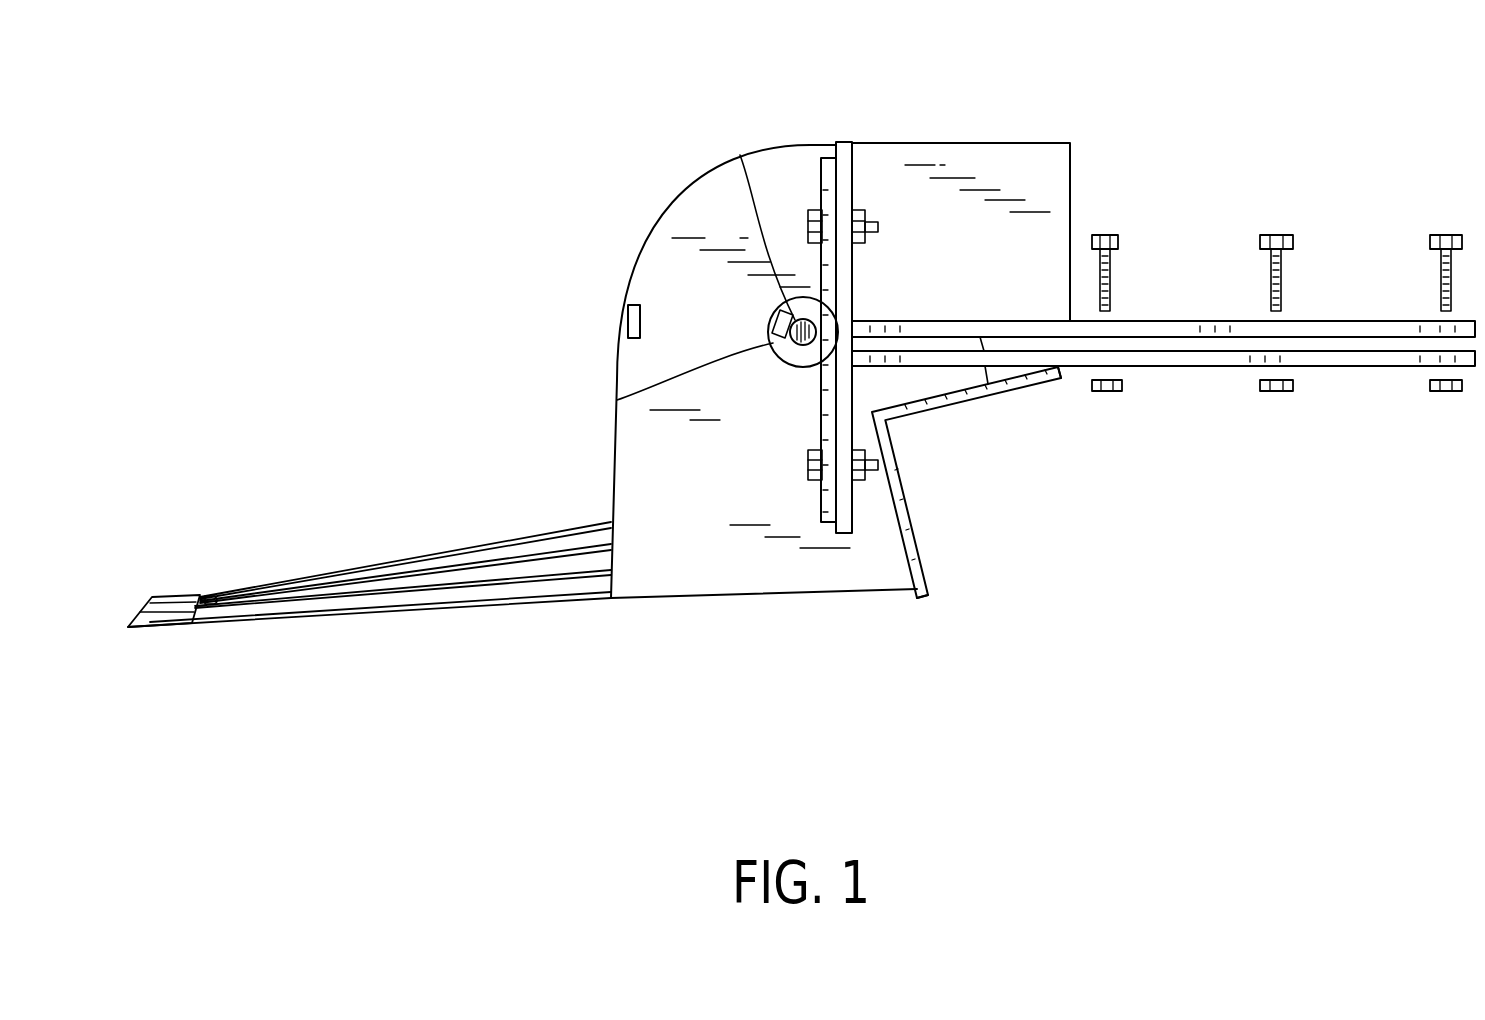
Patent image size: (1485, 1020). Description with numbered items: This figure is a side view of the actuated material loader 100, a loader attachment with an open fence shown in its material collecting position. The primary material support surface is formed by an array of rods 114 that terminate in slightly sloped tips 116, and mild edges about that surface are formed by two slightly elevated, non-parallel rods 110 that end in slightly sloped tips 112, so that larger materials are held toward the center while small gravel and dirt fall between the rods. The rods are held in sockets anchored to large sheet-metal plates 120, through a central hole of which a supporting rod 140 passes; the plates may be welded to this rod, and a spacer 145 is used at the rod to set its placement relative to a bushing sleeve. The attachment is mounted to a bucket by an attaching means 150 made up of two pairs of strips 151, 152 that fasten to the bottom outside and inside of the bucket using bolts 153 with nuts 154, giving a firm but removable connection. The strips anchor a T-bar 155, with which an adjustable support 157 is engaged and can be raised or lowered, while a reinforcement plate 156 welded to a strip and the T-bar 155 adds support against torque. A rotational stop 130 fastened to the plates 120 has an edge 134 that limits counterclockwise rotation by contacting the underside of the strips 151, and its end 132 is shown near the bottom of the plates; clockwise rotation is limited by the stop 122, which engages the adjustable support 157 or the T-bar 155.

The actuated material loader 100 is at (333, 150).
The non-parallel rods 110 is at (500, 536).
The slightly sloped tips 112 is at (210, 598).
The rods 114 is at (442, 610).
The slightly sloped tips 116 is at (148, 628).
The plates 120 is at (657, 262).
The stop 122 is at (628, 325).
The rotational stop 130 is at (892, 450).
The bracket lower end 132 is at (930, 590).
The edge 134 is at (1060, 380).
The supporting rod 140 is at (740, 155).
The spacer 145 is at (617, 400).
The attaching means 150 is at (1163, 339).
The strips 151 is at (1308, 362).
The strips 152 is at (1328, 328).
The bolts 153 is at (1440, 238).
The nuts 154 is at (1432, 392).
The T-bar 155 is at (848, 150).
The reinforcement plate 156 is at (1015, 165).
The adjustable support 157 is at (823, 178).